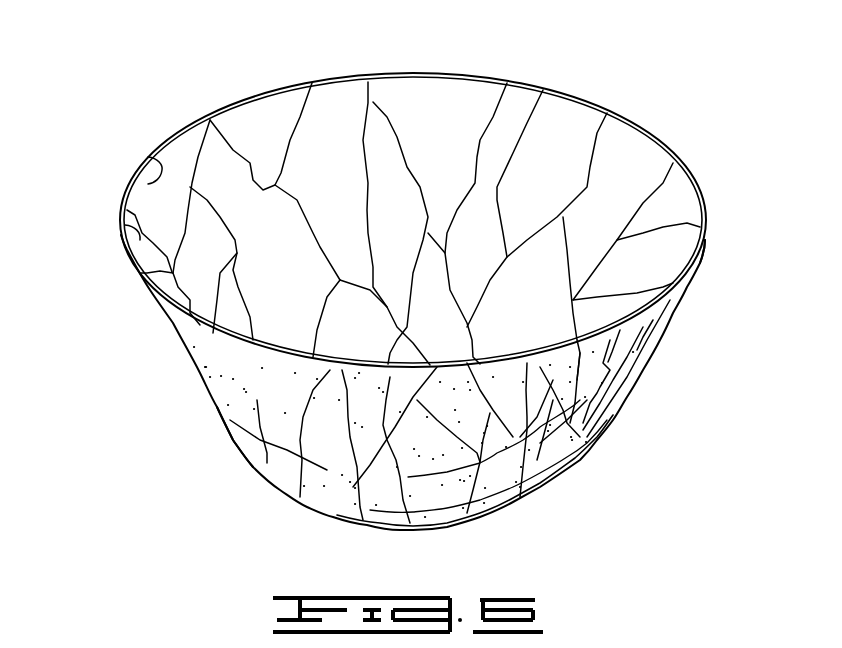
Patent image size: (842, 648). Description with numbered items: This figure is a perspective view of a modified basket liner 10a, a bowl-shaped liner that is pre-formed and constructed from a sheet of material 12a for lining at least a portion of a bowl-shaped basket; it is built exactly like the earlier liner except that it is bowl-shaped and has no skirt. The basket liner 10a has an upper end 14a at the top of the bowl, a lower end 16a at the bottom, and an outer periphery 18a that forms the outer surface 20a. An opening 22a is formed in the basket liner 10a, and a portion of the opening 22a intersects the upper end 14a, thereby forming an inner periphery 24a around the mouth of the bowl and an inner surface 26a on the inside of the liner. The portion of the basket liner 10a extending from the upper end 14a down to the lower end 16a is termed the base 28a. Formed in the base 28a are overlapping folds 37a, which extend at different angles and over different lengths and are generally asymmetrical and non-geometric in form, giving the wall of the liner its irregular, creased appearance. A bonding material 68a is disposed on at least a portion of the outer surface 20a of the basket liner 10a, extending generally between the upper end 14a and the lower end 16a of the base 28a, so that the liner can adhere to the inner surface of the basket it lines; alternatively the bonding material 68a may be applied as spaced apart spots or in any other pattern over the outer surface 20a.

The basket liner 10a is at (197, 79).
The sheet of material 12a is at (586, 96).
The upper end 14a is at (643, 124).
The opening 22a is at (704, 194).
The inner surface 26a is at (148, 157).
The inner periphery 24a is at (125, 225).
The outer periphery 18a is at (197, 380).
The outer surface 20a is at (232, 420).
The base 28a is at (252, 460).
The lower end 16a is at (460, 525).
The overlapping folds 37a is at (592, 390).
The bonding material 68a is at (537, 438).